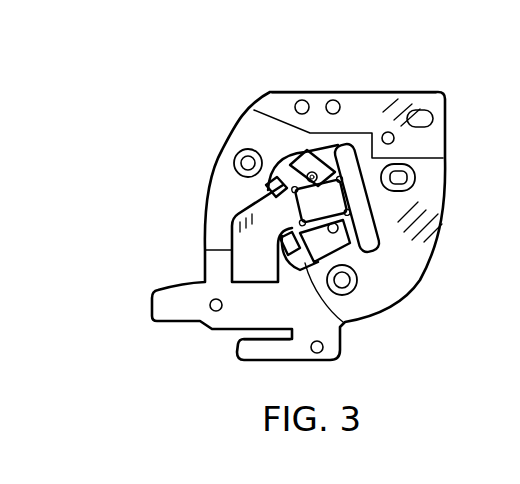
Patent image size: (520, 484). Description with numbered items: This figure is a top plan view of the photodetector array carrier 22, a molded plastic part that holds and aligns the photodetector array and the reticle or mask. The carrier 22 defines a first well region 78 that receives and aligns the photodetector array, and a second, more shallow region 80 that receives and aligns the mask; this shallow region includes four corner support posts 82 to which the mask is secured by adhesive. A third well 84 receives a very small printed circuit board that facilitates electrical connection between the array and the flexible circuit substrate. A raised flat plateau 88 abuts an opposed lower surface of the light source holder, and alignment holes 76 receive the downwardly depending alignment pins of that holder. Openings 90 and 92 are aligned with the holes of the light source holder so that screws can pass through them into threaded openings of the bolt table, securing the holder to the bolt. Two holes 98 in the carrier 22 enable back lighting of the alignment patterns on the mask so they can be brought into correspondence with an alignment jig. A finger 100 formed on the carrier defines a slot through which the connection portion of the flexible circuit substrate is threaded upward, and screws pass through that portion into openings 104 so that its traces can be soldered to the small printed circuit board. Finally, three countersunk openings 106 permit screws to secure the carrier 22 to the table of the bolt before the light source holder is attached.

The photodetector array carrier 22 is at (413, 257).
The alignment holes 76 is at (337, 92).
The first well region 78 is at (325, 198).
The second region 80 is at (313, 168).
The corner support posts 82 is at (268, 190).
The third well 84 is at (250, 247).
The raised flat plateau 88 is at (406, 108).
The opening 90 is at (301, 100).
The opening 92 is at (391, 131).
The holes 98 is at (373, 159).
The finger 100 is at (250, 350).
The openings 104 is at (211, 310).
The countersunk openings 106 is at (238, 162).